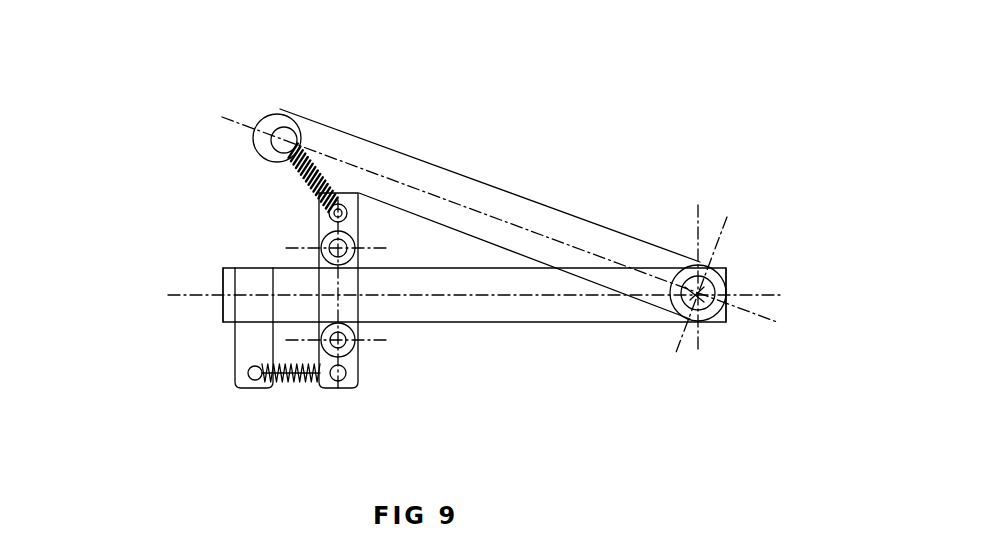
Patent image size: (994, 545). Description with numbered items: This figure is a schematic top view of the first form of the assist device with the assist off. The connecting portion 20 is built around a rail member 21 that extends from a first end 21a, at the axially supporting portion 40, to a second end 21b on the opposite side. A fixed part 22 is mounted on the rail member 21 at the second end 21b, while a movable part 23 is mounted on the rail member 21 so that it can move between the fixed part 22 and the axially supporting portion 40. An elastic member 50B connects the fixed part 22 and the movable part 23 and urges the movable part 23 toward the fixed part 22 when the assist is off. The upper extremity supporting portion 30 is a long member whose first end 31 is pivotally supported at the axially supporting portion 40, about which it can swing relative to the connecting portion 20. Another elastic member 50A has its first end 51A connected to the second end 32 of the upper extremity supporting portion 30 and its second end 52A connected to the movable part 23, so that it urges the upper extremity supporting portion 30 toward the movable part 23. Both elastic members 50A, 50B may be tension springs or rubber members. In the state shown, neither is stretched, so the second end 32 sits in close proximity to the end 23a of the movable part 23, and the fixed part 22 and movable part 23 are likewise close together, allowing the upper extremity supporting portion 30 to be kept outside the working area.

The connecting portion 20 is at (105, 298).
The rail member 21 is at (223, 303).
The first end of rail member 21a is at (730, 315).
The second end of rail member 21b is at (223, 270).
The fixed part 22 is at (244, 352).
The movable part 23 is at (318, 388).
The end of movable part 23a is at (358, 192).
The upper extremity supporting portion 30 is at (535, 220).
The first end of upper extremity supporting portion 31 is at (723, 280).
The second end of upper extremity supporting portion 32 is at (288, 108).
The axially supporting portion 40 is at (712, 327).
The elastic member 50A is at (312, 186).
The elastic member 50B is at (290, 365).
The first end of elastic member 51A is at (284, 140).
The second end of elastic member 52A is at (358, 212).